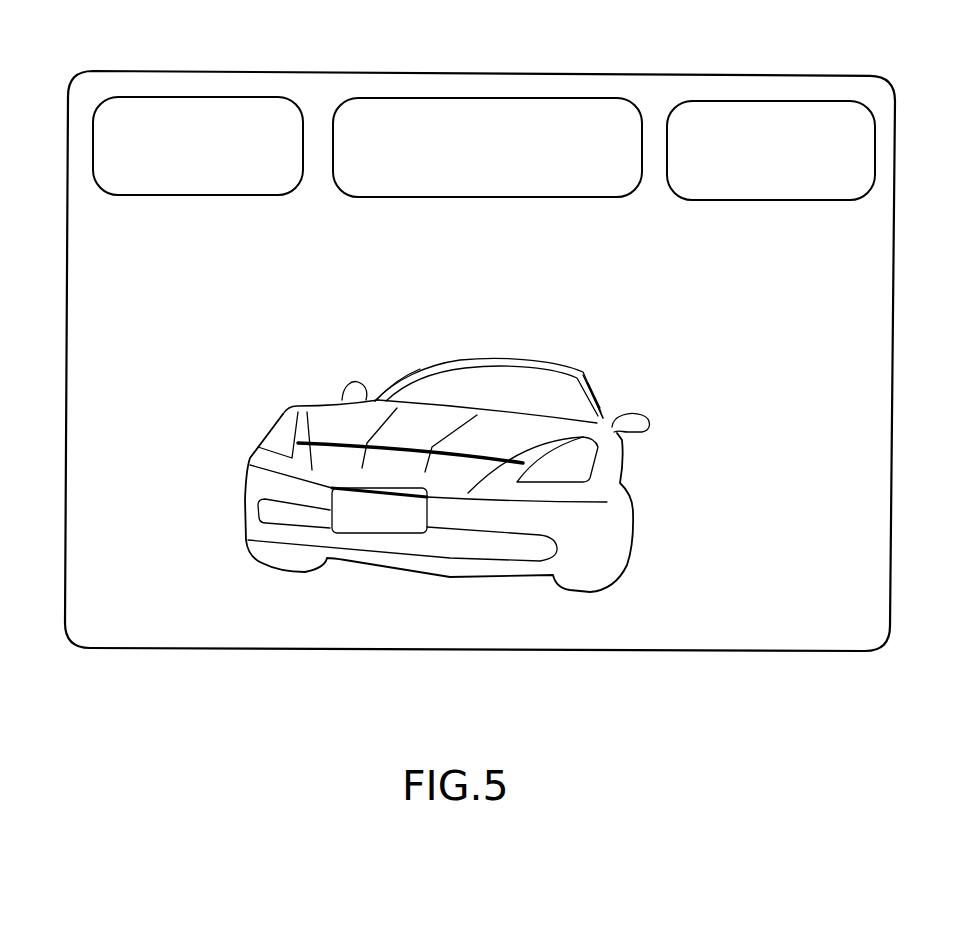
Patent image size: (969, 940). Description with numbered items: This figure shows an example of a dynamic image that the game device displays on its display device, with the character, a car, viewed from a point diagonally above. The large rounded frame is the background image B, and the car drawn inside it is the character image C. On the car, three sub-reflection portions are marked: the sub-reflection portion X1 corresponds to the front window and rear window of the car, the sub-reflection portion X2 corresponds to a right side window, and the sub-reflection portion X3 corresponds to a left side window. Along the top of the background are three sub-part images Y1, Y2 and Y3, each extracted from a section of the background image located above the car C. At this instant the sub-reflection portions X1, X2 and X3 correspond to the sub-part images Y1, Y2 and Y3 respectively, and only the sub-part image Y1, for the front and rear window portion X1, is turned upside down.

The background image B is at (292, 635).
The character image C is at (456, 502).
The sub-part image Y1 is at (563, 110).
The sub-part image Y2 is at (221, 105).
The sub-part image Y3 is at (792, 115).
The sub-reflection portion X1 is at (484, 380).
The sub-reflection portion X2 is at (388, 370).
The sub-reflection portion X3 is at (606, 408).